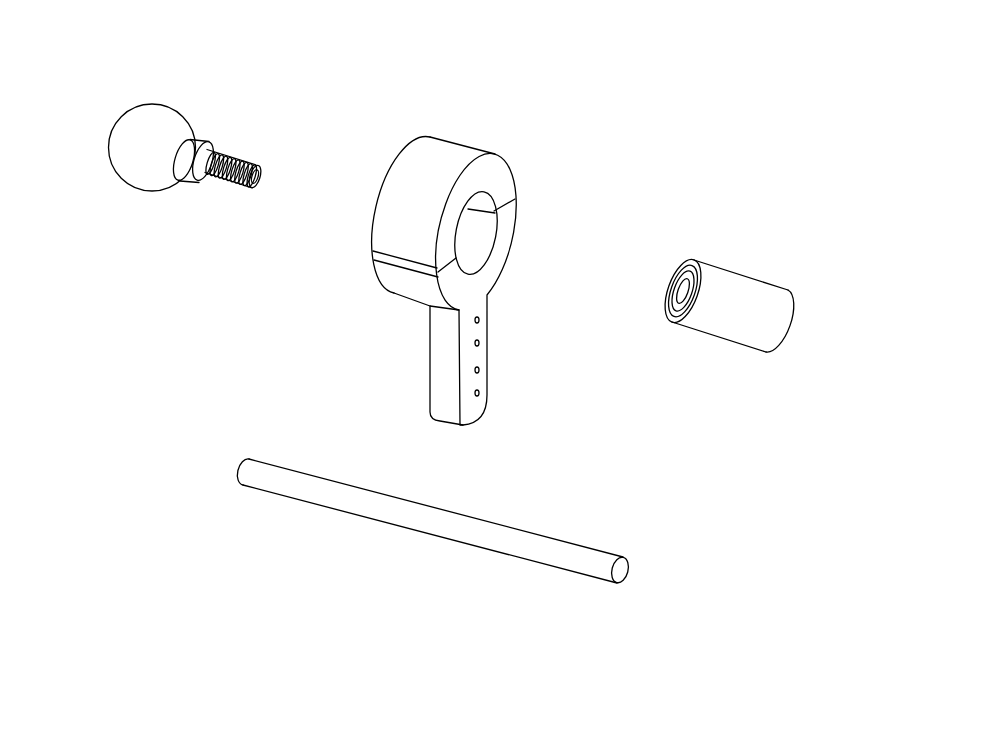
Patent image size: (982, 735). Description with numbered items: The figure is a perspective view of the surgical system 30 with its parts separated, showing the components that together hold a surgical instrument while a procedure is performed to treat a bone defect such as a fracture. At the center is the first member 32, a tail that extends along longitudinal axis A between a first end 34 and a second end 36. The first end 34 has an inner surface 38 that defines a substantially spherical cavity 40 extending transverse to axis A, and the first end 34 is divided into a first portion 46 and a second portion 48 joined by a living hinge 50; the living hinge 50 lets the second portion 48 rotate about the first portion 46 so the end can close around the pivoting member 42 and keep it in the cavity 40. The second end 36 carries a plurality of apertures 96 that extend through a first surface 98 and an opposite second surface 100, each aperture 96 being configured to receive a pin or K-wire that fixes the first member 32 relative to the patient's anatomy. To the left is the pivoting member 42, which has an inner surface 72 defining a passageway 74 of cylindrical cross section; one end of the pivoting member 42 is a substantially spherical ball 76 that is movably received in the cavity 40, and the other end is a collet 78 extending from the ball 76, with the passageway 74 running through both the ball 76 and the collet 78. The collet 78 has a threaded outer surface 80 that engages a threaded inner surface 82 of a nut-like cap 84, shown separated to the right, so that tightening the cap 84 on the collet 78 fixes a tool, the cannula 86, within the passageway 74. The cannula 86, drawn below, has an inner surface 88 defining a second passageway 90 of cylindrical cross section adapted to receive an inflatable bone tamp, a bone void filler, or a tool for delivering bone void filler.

The surgical system 30 is at (748, 450).
The first member 32 is at (346, 294).
The first end 34 is at (445, 150).
The second end 36 is at (465, 425).
The inner surface 38 is at (487, 225).
The cavity 40 is at (490, 250).
The pivoting member 42 is at (135, 228).
The first portion 46 is at (402, 293).
The second portion 48 is at (410, 150).
The living hinge 50 is at (372, 253).
The inner surface 72 is at (257, 188).
The passageway 74 is at (259, 177).
The ball 76 is at (142, 152).
The collet 78 is at (229, 147).
The threaded outer surface 80 is at (250, 149).
The threaded inner surface 82 is at (667, 313).
The cap 84 is at (776, 271).
The cannula 86 is at (413, 538).
The inner surface 88 is at (245, 474).
The second passageway 90 is at (238, 462).
The aperture 96 is at (480, 344).
The first surface 98 is at (482, 292).
The second surface 100 is at (430, 373).